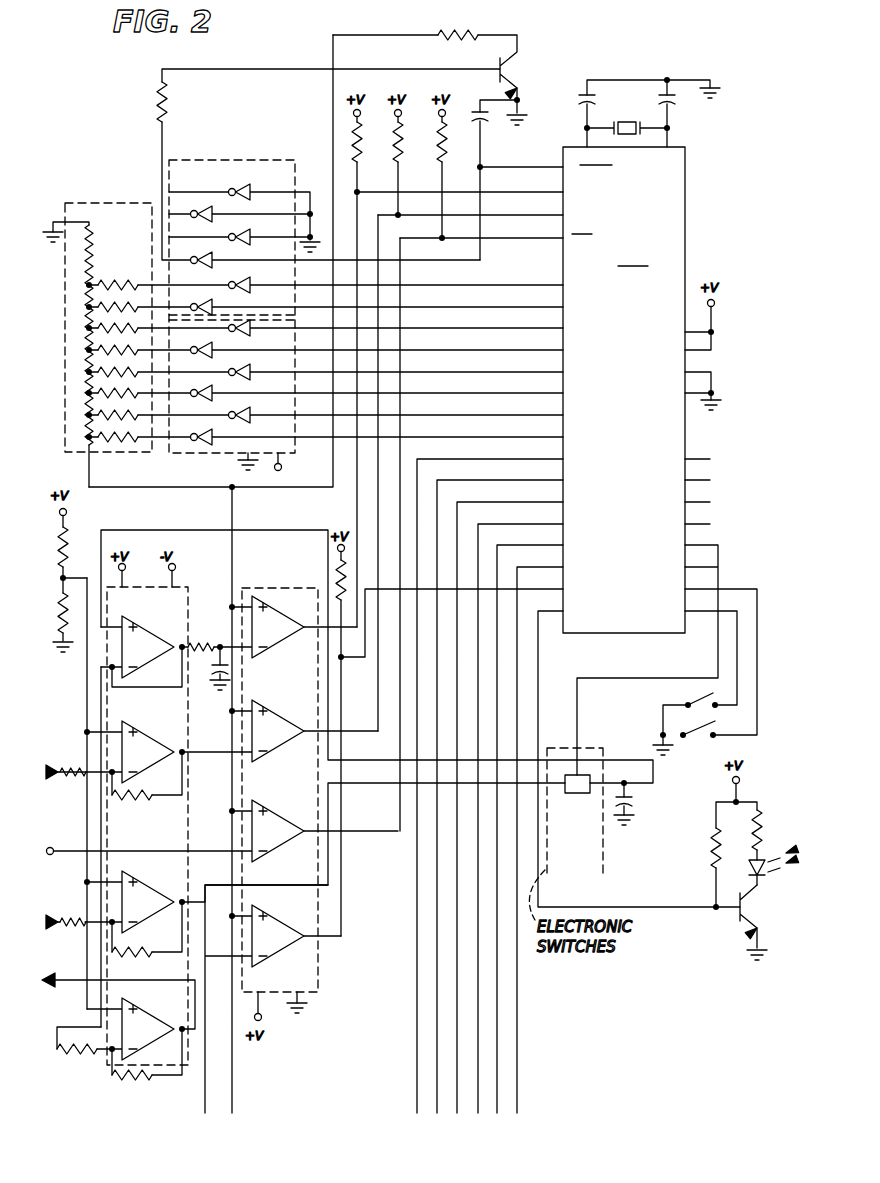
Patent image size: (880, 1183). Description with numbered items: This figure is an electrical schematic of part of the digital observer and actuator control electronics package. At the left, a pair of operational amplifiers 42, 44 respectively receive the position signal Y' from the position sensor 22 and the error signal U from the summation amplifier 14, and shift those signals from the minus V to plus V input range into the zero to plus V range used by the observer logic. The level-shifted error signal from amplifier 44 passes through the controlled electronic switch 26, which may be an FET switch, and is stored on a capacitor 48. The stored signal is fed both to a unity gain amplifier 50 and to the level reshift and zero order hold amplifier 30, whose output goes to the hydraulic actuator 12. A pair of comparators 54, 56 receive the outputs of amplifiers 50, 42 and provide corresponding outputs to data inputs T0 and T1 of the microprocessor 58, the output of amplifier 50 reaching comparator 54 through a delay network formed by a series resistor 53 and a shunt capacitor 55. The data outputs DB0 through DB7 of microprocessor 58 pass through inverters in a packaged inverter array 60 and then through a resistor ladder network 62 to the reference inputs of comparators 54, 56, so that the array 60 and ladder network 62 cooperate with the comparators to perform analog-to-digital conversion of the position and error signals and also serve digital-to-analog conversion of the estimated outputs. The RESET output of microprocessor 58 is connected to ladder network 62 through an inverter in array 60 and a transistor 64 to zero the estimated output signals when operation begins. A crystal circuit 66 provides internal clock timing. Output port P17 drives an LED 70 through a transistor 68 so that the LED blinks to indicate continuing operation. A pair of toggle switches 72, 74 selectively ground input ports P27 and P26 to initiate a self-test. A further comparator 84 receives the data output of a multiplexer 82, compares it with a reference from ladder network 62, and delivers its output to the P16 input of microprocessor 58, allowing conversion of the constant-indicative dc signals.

The hydraulic actuator 12 is at (57, 985).
The summation amplifier 14 is at (55, 925).
The position sensor 22 is at (62, 783).
The controlled electronic switch 26 is at (575, 797).
The zero order hold amplifier 30 is at (100, 1074).
The operational amplifier 42 is at (147, 752).
The operational amplifier 44 is at (156, 903).
The capacitor 48 is at (637, 807).
The unity gain amplifier 50 is at (150, 648).
The series resistor 53 is at (200, 642).
The comparator 54 is at (280, 608).
The shunt capacitor 55 is at (214, 684).
The comparator 56 is at (282, 716).
The microprocessor 58 is at (672, 214).
The packaged inverter array 60 is at (241, 155).
The resistor ladder network 62 is at (118, 198).
The transistor 64 is at (528, 75).
The crystal circuit 66 is at (658, 72).
The transistor 68 is at (728, 926).
The LED 70 is at (761, 862).
The toggle switch 72 is at (680, 697).
The toggle switch 74 is at (678, 723).
The multiplexer 82 is at (282, 818).
The comparator 84 is at (282, 923).